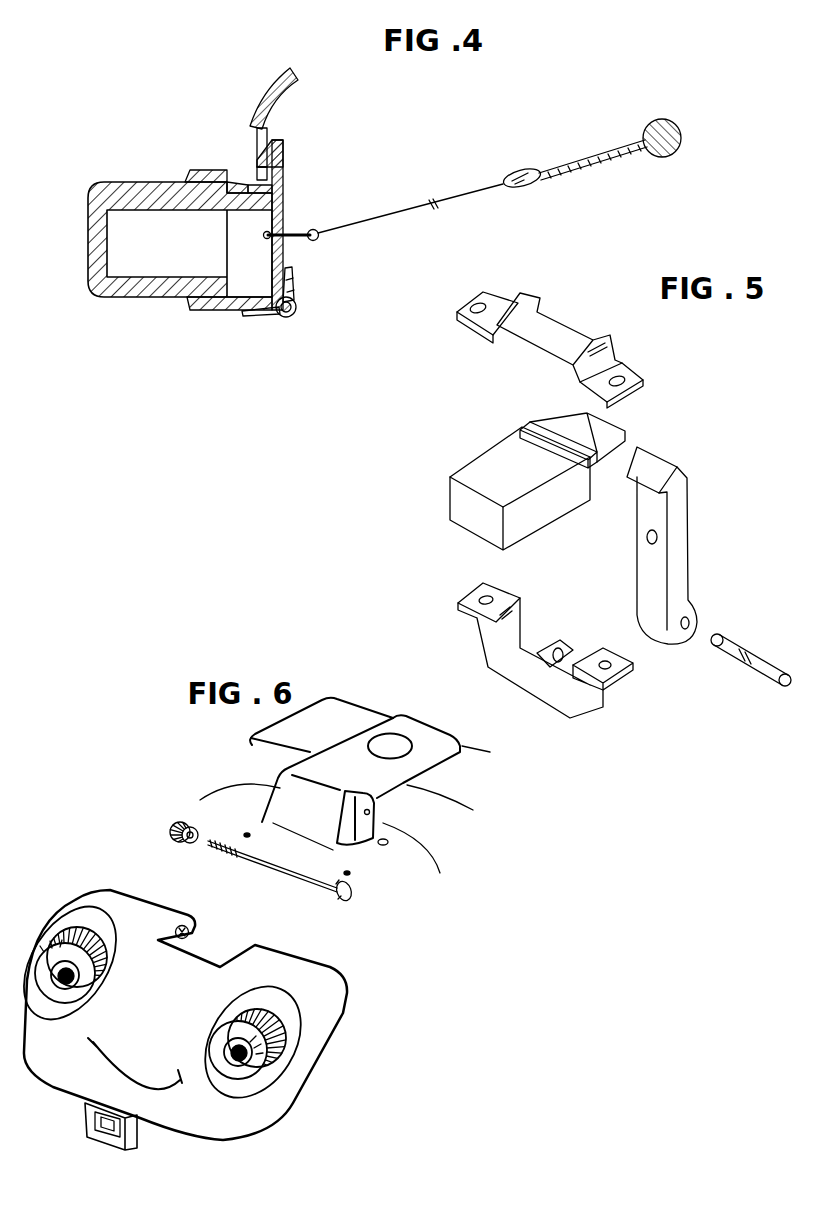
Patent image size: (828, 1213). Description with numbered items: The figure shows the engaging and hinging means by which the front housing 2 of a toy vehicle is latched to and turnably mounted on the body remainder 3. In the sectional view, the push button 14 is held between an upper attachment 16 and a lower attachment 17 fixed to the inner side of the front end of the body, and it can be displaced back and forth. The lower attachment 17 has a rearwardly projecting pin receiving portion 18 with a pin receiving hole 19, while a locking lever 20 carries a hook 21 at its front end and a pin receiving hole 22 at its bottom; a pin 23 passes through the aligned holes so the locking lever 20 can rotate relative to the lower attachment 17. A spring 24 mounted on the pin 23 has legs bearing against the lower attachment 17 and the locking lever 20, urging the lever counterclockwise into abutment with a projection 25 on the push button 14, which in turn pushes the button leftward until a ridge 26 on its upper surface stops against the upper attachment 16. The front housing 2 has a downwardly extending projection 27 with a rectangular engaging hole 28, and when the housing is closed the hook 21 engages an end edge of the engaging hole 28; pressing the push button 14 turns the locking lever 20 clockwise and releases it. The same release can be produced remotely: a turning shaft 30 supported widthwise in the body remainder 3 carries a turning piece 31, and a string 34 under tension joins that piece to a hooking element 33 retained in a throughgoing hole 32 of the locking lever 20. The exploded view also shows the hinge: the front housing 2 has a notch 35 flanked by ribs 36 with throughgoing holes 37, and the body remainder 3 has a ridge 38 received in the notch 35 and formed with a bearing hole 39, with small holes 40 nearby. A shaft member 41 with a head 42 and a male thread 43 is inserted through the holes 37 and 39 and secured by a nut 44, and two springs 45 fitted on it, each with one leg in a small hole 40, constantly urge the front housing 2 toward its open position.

In FIG. 4, the front housing 2 is at (284, 97).
In FIG. 6, the front housing 2 is at (98, 889).
In FIG. 6, the body remainder 3 is at (493, 770).
In FIG. 4, the push button 14 is at (113, 298).
In FIG. 5, the push button 14 is at (449, 500).
In FIG. 4, the upper attachment 16 is at (185, 179).
In FIG. 5, the upper attachment 16 is at (626, 350).
In FIG. 4, the lower attachment 17 is at (192, 314).
In FIG. 5, the lower attachment 17 is at (596, 711).
In FIG. 4, the pin receiving portion 18 is at (297, 313).
In FIG. 5, the pin receiving portion 18 is at (555, 647).
In FIG. 5, the pin receiving hole 19 is at (581, 652).
In FIG. 4, the locking lever 20 is at (285, 180).
In FIG. 5, the locking lever 20 is at (690, 556).
In FIG. 4, the hook 21 is at (270, 160).
In FIG. 5, the hook 21 is at (661, 468).
In FIG. 5, the pin receiving hole 22 is at (690, 623).
In FIG. 4, the pin 23 is at (288, 318).
In FIG. 5, the pin 23 is at (767, 686).
In FIG. 4, the spring 24 is at (294, 283).
In FIG. 5, the spring 24 is at (740, 660).
In FIG. 4, the projection 25 is at (249, 186).
In FIG. 5, the projection 25 is at (605, 421).
In FIG. 4, the ridge 26 is at (221, 184).
In FIG. 5, the ridge 26 is at (538, 428).
In FIG. 4, the projection 27 is at (256, 178).
In FIG. 6, the projection 27 is at (88, 1124).
In FIG. 4, the engaging hole 28 is at (265, 141).
In FIG. 6, the engaging hole 28 is at (112, 1140).
In FIG. 4, the turning shaft 30 is at (682, 138).
In FIG. 4, the turning piece 31 is at (610, 160).
In FIG. 5, the throughgoing hole 32 is at (647, 540).
In FIG. 4, the hooking element 33 is at (316, 231).
In FIG. 4, the string 34 is at (452, 203).
In FIG. 6, the notch 35 is at (216, 950).
In FIG. 6, the ribs 36 is at (188, 940).
In FIG. 6, the throughgoing holes 37 is at (180, 926).
In FIG. 6, the ridge 38 is at (335, 765).
In FIG. 6, the bearing hole 39 is at (370, 812).
In FIG. 6, the small holes 40 is at (388, 845).
In FIG. 6, the shaft member 41 is at (298, 878).
In FIG. 6, the screw head 42 is at (352, 894).
In FIG. 6, the male thread 43 is at (217, 868).
In FIG. 6, the nut 44 is at (178, 821).
In FIG. 6, the springs 45 is at (250, 836).